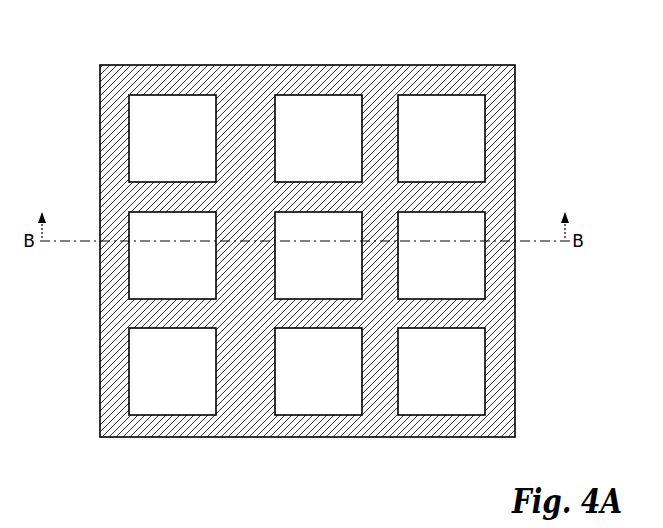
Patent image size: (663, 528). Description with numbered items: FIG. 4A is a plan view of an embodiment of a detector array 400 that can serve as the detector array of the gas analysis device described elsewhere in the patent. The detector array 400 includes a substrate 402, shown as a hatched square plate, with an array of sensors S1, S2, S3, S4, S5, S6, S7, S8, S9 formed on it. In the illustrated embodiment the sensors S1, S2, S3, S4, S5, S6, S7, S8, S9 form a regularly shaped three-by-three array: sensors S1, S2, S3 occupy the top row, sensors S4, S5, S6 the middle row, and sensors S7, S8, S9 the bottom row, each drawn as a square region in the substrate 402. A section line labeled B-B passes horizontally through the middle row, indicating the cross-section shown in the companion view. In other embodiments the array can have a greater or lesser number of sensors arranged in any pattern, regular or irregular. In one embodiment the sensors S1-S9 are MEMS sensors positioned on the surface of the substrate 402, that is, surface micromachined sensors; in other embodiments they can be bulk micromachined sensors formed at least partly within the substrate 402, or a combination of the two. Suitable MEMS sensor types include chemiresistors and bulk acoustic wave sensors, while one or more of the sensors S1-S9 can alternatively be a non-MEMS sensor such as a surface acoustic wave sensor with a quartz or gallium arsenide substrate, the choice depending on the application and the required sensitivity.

The detector array 400 is at (348, 245).
The substrate 402 is at (114, 427).
The sensor S1 is at (172, 138).
The sensor S2 is at (318, 138).
The sensor S3 is at (441, 138).
The sensor S4 is at (172, 255).
The sensor S5 is at (318, 255).
The sensor S6 is at (441, 255).
The sensor S7 is at (172, 371).
The sensor S8 is at (318, 371).
The sensor S9 is at (441, 371).